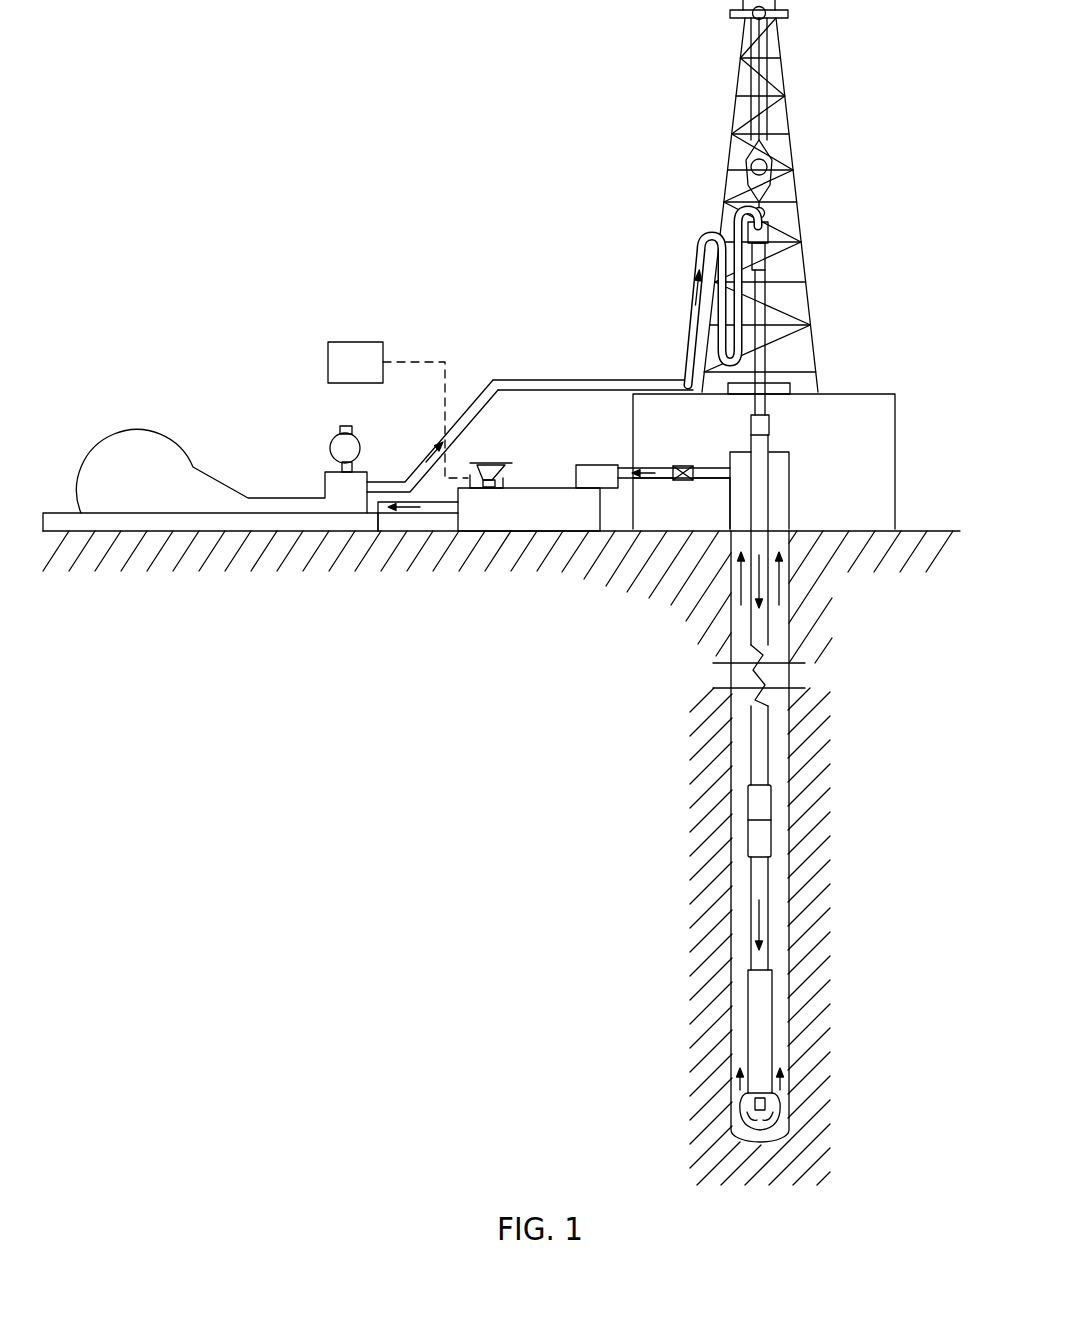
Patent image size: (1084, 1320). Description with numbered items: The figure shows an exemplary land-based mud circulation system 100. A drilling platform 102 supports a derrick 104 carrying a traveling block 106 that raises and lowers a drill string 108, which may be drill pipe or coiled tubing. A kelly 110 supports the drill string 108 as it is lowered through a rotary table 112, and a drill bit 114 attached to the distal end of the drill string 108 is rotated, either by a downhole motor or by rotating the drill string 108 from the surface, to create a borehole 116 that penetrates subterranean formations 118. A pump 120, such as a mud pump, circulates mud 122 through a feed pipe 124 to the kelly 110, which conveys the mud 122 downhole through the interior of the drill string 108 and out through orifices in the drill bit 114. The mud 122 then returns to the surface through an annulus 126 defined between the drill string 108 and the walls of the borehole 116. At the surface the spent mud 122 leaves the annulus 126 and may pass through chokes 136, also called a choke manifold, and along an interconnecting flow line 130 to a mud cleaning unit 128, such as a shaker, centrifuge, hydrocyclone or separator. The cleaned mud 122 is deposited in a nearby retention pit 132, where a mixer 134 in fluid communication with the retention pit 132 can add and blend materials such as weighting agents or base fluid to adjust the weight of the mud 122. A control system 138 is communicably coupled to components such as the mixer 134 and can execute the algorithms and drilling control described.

The mud circulation system 100 is at (458, 90).
The drilling platform 102 is at (896, 410).
The derrick 104 is at (790, 107).
The traveling block 106 is at (772, 156).
The drill string 108 is at (760, 648).
The kelly 110 is at (758, 293).
The rotary table 112 is at (790, 388).
The drill bit 114 is at (782, 1105).
The borehole 116 is at (790, 745).
The subterranean formations 118 is at (611, 785).
The pump 120 is at (150, 492).
The mud 122 is at (392, 487).
The feed pipe 124 is at (493, 380).
The annulus 126 is at (777, 918).
The mud cleaning unit 128 is at (593, 464).
The flow line 130 is at (718, 483).
The retention pit 132 is at (544, 523).
The mixer 134 is at (473, 485).
The chokes 136 is at (685, 481).
The control system 138 is at (372, 375).